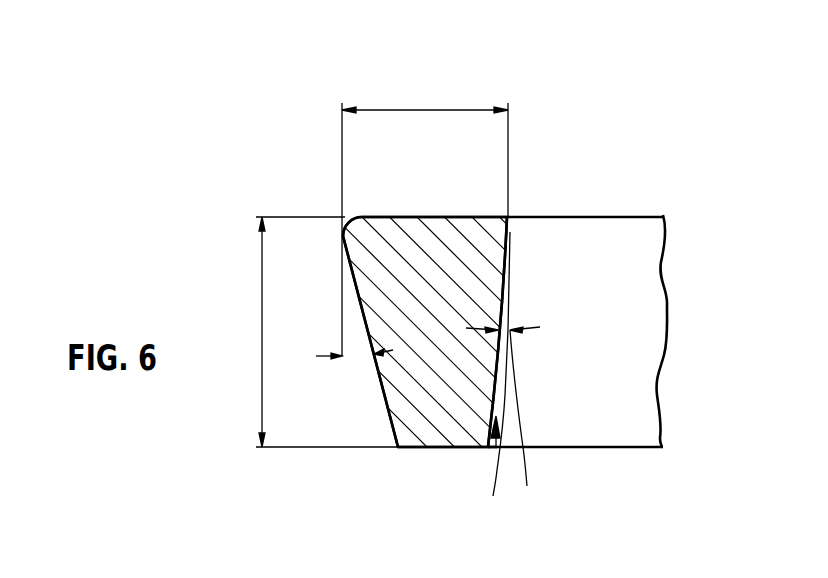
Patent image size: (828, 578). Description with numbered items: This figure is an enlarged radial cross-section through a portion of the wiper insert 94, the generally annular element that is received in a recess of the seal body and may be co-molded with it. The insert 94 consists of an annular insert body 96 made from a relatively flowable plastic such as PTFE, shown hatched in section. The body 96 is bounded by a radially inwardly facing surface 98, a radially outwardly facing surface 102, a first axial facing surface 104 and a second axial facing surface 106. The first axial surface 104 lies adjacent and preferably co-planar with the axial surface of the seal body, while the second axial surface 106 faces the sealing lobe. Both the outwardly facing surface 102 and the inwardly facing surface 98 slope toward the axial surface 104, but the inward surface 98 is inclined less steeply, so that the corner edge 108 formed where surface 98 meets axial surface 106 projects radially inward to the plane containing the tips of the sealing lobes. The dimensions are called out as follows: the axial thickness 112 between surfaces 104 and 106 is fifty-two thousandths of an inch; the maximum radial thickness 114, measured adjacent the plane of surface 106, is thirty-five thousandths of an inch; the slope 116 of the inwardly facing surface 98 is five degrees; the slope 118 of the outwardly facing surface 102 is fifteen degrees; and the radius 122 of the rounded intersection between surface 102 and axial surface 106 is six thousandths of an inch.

The wiper insert 94 is at (496, 448).
The insert body 96 is at (423, 405).
The radially inwardly facing surface 98 is at (503, 377).
The radially outwardly facing surface 102 is at (387, 407).
The first axial facing surface 104 is at (440, 449).
The second axial facing surface 106 is at (428, 216).
The corner edge 108 is at (507, 216).
The axial thickness 112 is at (262, 325).
The maximum radial thickness 114 is at (413, 110).
The slope of the inwardly facing surface 116 is at (532, 421).
The slope of the outwardly facing surface 118 is at (358, 359).
The radius of the rounded intersection 122 is at (346, 222).